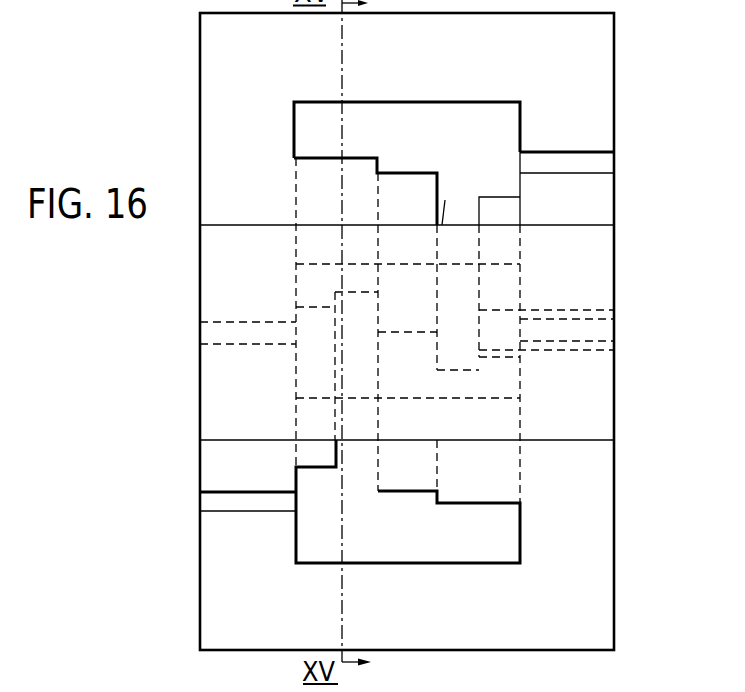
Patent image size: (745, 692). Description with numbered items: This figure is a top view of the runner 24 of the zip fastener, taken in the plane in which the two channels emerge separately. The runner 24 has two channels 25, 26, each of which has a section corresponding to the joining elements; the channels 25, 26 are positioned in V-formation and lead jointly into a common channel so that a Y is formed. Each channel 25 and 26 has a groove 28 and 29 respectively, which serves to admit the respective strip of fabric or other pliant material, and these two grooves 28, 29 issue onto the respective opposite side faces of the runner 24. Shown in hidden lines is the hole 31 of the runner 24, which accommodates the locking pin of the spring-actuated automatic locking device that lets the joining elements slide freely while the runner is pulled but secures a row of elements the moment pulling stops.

The runner 24 is at (573, 553).
The channel 25 is at (473, 130).
The channel 26 is at (313, 537).
The groove 28 is at (227, 500).
The groove 29 is at (565, 160).
The hole 31 is at (572, 345).